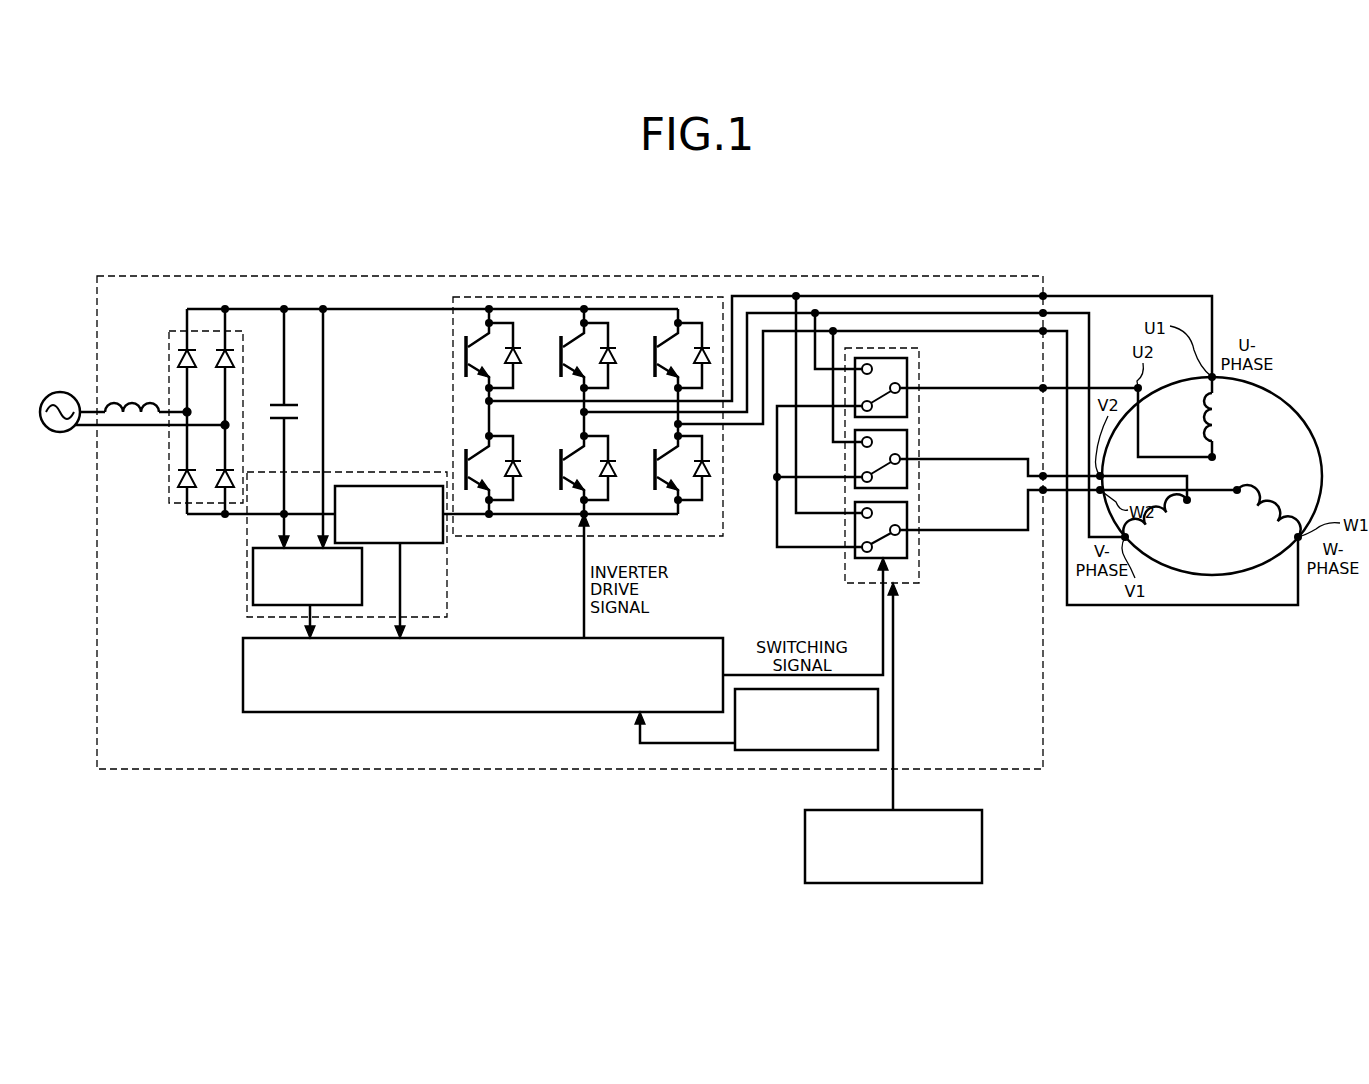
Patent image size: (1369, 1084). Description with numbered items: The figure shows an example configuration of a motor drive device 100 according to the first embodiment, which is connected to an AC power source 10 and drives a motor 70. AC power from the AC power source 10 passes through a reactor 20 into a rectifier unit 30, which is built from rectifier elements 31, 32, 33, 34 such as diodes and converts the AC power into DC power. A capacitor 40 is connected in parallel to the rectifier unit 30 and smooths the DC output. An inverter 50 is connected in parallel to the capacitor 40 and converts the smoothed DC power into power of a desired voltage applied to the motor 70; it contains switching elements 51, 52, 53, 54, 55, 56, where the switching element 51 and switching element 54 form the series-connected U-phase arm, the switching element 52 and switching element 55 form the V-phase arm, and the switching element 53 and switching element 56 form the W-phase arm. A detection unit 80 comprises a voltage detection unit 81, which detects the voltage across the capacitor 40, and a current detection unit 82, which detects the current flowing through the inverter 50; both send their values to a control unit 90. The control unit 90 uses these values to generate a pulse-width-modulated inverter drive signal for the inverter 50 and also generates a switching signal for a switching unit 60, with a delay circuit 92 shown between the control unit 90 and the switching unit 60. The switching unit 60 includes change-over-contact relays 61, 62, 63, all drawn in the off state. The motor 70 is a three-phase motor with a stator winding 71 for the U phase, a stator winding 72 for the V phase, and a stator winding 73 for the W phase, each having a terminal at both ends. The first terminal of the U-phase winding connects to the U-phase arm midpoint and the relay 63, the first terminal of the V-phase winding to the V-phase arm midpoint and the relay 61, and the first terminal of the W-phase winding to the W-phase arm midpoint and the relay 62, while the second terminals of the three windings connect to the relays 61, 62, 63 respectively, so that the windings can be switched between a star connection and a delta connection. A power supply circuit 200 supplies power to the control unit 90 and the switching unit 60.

The AC power source 10 is at (60, 392).
The reactor 20 is at (130, 393).
The rectifier unit 30 is at (169, 450).
The rectifier element 31 is at (191, 351).
The rectifier element 32 is at (230, 351).
The rectifier element 33 is at (178, 483).
The rectifier element 34 is at (219, 485).
The capacitor 40 is at (275, 401).
The inverter 50 is at (513, 297).
The switching element 51 is at (466, 352).
The switching element 52 is at (561, 350).
The switching element 53 is at (655, 350).
The switching element 54 is at (466, 463).
The switching element 55 is at (561, 459).
The switching element 56 is at (655, 481).
The switching unit 60 is at (900, 586).
The relay 61 is at (910, 408).
The relay 62 is at (910, 479).
The relay 63 is at (910, 549).
The motor 70 is at (1285, 395).
The stator winding 71 is at (1204, 440).
The stator winding 72 is at (1172, 522).
The stator winding 73 is at (1272, 510).
The detection unit 80 is at (347, 472).
The voltage detection unit 81 is at (253, 578).
The current detection unit 82 is at (382, 543).
The control unit 90 is at (243, 680).
The delay circuit 92 is at (735, 712).
The motor drive device 100 is at (297, 276).
The power supply circuit 200 is at (982, 838).